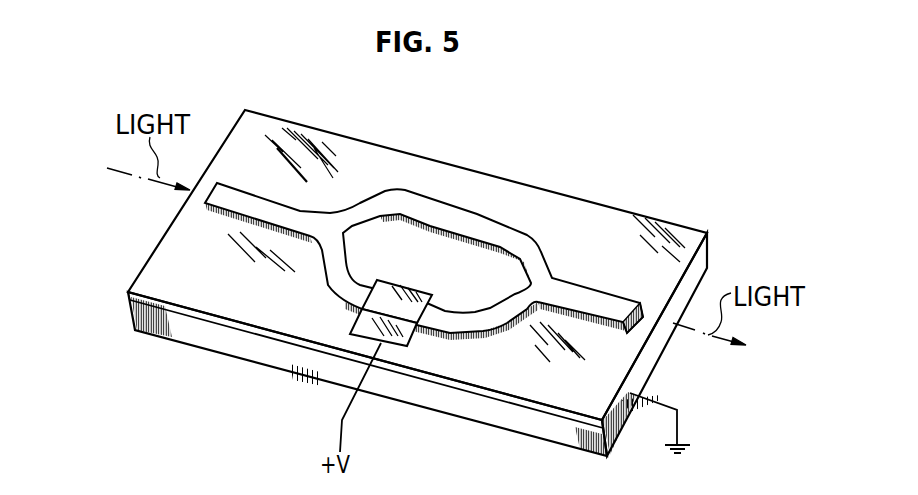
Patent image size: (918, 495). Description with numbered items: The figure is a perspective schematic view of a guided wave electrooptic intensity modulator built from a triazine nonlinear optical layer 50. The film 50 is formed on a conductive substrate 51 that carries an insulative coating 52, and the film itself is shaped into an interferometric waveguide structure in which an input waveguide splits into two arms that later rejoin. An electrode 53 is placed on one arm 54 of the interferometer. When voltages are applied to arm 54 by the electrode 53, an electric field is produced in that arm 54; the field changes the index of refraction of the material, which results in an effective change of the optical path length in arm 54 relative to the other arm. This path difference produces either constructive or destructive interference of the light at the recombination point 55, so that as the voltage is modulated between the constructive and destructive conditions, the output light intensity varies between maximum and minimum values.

The triazine nonlinear optical layer 50 is at (424, 232).
The conductive substrate 51 is at (190, 335).
The insulative coating 52 is at (127, 293).
The electrode 53 is at (410, 333).
The arm 54 is at (330, 292).
The recombination point 55 is at (553, 278).